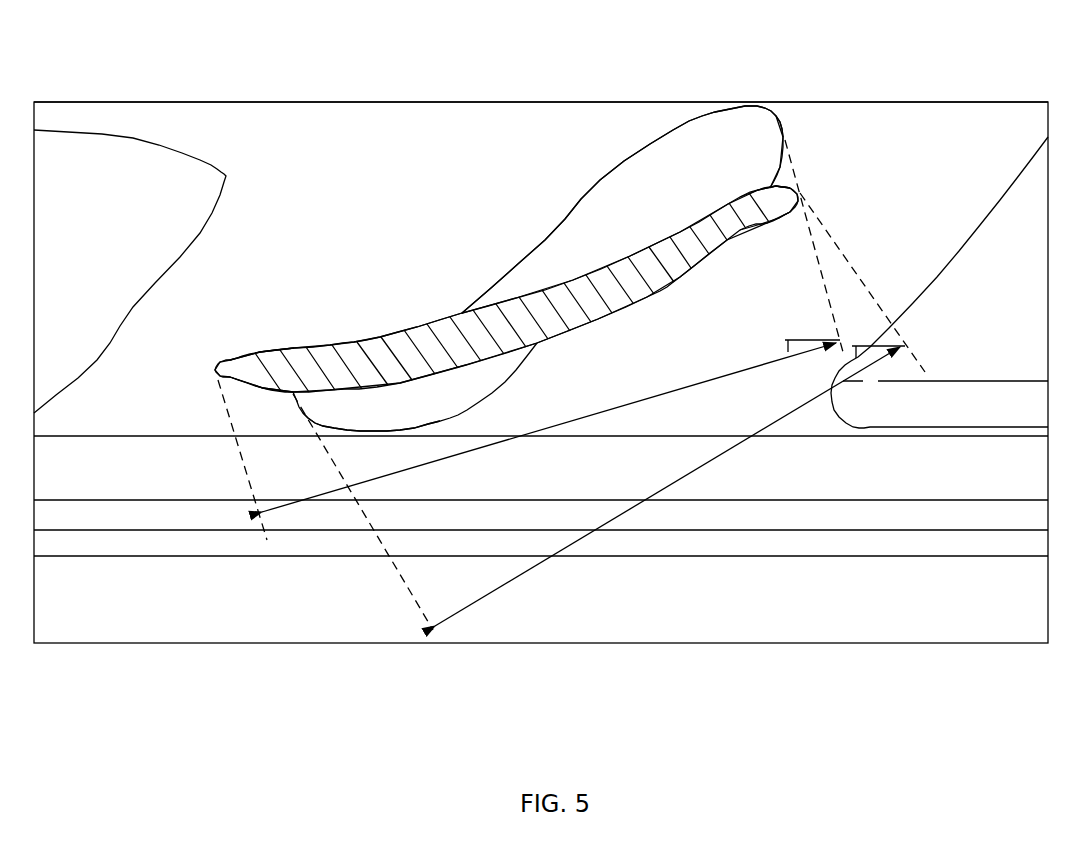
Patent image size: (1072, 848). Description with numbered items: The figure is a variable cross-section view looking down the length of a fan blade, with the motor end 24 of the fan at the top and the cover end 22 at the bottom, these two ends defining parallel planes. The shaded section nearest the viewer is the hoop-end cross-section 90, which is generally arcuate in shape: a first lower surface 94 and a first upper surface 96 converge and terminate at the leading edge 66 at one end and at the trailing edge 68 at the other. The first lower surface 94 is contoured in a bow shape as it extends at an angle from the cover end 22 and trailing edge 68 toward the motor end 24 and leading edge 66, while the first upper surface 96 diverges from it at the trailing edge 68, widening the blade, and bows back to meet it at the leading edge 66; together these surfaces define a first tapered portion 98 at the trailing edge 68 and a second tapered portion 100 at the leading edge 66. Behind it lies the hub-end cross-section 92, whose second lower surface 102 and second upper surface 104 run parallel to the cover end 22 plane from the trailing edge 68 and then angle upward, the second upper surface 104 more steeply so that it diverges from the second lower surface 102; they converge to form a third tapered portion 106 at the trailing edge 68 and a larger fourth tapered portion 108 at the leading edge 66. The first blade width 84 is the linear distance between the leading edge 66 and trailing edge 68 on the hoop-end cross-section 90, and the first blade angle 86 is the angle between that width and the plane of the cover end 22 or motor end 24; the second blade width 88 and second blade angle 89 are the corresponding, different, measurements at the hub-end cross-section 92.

The cover end 22 is at (580, 673).
The motor end 24 is at (580, 90).
The leading edge 66 is at (797, 190).
The trailing edge 68 is at (300, 408).
The first blade width 84 is at (490, 445).
The first blade angle 86 is at (787, 346).
The second blade width 88 is at (722, 455).
The second blade angle 89 is at (845, 356).
The hoop-end cross-section 90 is at (606, 317).
The hub-end cross-section 92 is at (628, 217).
The first lower surface 94 is at (673, 287).
The first upper surface 96 is at (357, 338).
The first tapered portion 98 is at (280, 367).
The second tapered portion 100 is at (770, 200).
The second lower surface 102 is at (497, 389).
The second upper surface 104 is at (553, 232).
The third tapered portion 106 is at (370, 403).
The fourth tapered portion 108 is at (723, 155).